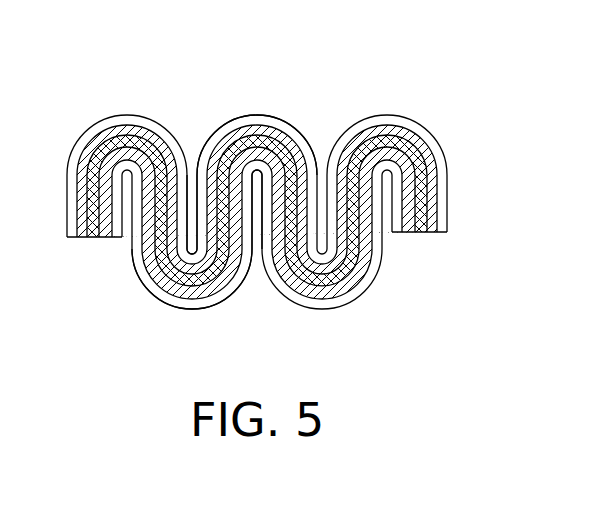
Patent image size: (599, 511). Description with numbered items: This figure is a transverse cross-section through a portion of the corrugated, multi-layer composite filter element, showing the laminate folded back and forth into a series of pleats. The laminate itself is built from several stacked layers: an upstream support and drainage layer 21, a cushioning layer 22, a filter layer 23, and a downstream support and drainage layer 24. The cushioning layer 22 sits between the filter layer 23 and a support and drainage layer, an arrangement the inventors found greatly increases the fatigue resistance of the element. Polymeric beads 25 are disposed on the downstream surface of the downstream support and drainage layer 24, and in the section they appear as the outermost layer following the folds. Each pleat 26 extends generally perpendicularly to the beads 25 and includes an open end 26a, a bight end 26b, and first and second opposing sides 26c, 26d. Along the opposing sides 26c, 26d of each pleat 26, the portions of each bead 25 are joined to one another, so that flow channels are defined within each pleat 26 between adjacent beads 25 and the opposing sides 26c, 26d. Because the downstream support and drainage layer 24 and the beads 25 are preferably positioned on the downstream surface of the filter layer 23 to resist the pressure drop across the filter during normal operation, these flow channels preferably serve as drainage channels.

The upstream support and drainage layer 21 is at (447, 217).
The cushioning layer 22 is at (433, 173).
The filter layer 23 is at (414, 126).
The downstream support and drainage layer 24 is at (403, 233).
The polymeric beads 25 is at (334, 309).
The pleat 26 is at (231, 100).
The open end 26a is at (258, 275).
The bight end 26b is at (256, 113).
The first opposing side 26c is at (195, 165).
The second opposing side 26d is at (286, 165).